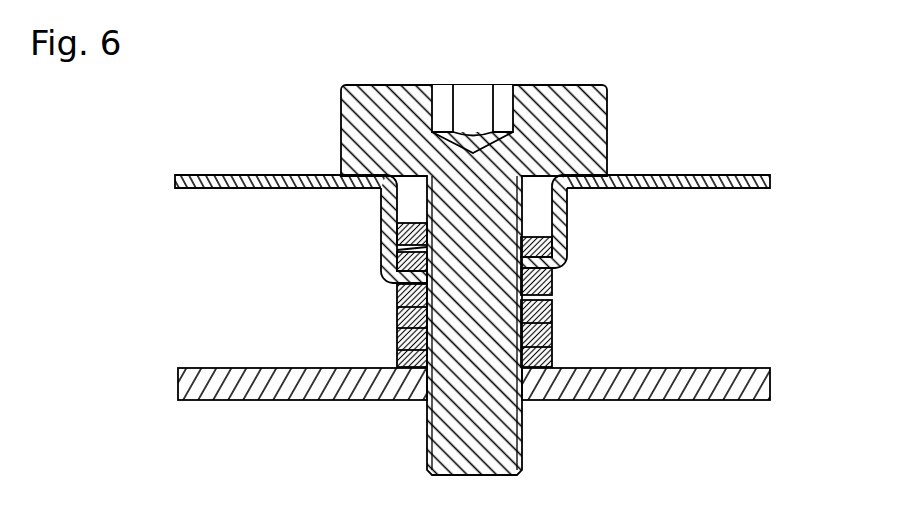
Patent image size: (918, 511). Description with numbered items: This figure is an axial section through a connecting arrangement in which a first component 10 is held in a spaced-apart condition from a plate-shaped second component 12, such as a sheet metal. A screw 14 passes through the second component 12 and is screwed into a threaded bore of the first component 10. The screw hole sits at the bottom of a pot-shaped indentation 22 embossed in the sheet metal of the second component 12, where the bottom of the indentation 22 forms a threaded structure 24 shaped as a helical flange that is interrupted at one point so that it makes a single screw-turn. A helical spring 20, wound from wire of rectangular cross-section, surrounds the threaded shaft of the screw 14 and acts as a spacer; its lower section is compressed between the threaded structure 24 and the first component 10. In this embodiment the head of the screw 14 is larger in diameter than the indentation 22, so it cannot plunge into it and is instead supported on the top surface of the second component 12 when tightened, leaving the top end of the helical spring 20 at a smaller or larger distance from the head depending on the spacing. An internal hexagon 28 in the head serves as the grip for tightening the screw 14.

The first component 10 is at (185, 385).
The second component 12 is at (718, 176).
The screw 14 is at (336, 99).
The helical spring 20 is at (552, 334).
The pot-shaped indentation 22 is at (383, 212).
The threaded structure 24 is at (395, 284).
The internal hexagon 28 is at (513, 97).